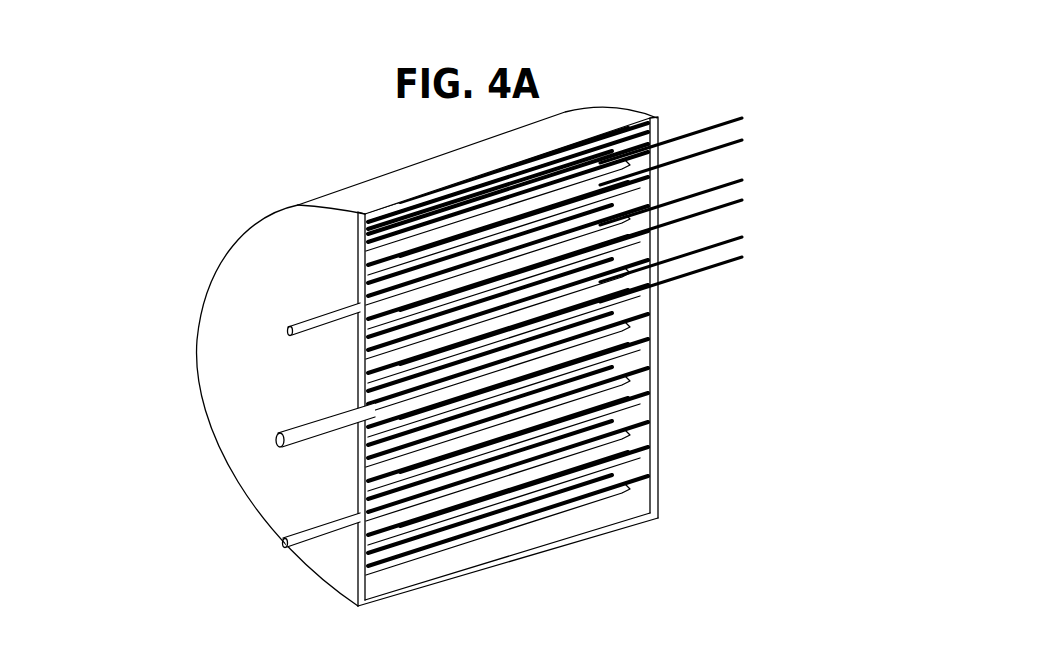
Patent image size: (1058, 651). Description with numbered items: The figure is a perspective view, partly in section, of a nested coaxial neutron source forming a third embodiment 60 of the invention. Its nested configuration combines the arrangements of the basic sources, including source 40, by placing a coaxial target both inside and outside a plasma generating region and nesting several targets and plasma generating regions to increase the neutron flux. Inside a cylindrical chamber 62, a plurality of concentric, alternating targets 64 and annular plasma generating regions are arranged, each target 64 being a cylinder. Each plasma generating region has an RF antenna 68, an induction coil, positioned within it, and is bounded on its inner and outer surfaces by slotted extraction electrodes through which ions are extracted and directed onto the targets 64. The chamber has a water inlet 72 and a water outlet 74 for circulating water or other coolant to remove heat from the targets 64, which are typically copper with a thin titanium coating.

The third embodiment 60 is at (230, 172).
The cylindrical chamber 62 is at (382, 180).
The target 64 is at (527, 555).
The RF antenna 68 is at (742, 145).
The source 40 is at (634, 527).
The water inlet 72 is at (284, 538).
The water outlet 74 is at (288, 327).